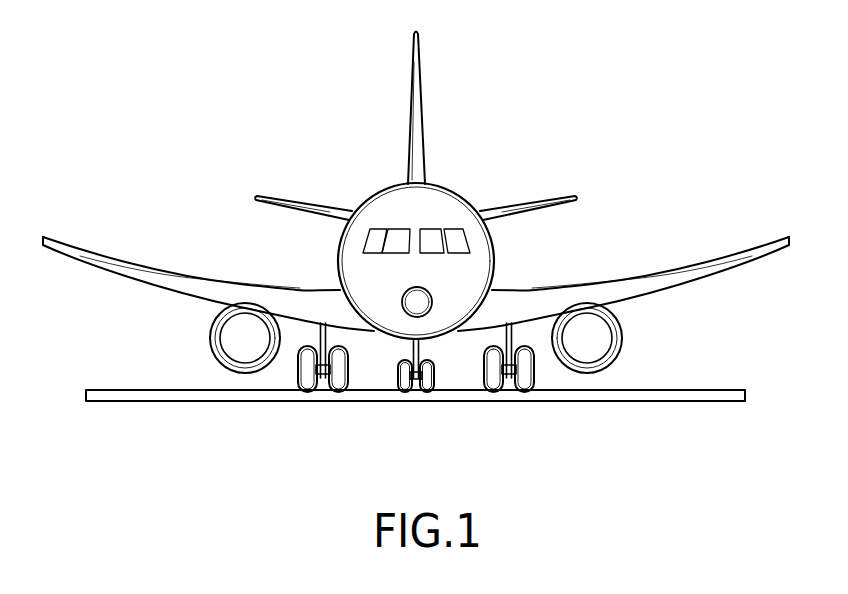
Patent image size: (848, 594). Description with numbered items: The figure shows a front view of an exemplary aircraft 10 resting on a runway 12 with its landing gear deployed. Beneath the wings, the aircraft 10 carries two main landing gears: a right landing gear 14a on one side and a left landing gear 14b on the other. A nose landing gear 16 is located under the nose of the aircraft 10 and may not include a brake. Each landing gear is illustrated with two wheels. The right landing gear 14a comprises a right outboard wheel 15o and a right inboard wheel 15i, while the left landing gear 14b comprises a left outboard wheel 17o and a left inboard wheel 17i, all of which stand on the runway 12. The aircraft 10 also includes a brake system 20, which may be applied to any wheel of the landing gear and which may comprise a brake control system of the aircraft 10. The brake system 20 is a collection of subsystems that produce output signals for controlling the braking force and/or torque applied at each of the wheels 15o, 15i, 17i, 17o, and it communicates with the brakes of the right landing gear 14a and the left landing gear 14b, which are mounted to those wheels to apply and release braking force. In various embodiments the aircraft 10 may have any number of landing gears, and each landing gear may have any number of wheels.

The aircraft 10 is at (230, 78).
The runway 12 is at (715, 390).
The right landing gear 14a is at (318, 377).
The left landing gear 14b is at (510, 377).
The right outboard (ROB) wheel 15o is at (294, 376).
The right inboard (RIB) wheel 15i is at (346, 377).
The nose landing gear 16 is at (415, 378).
The left inboard (LIB) wheel 17i is at (485, 377).
The left outboard (LOB) wheel 17o is at (538, 380).
The brake system 20 is at (425, 207).